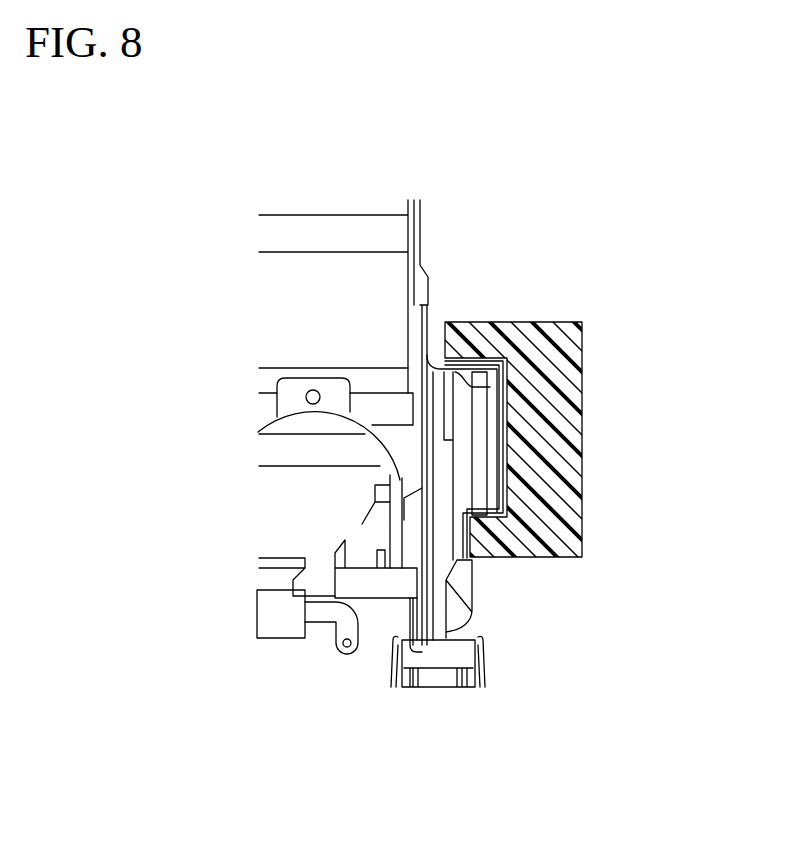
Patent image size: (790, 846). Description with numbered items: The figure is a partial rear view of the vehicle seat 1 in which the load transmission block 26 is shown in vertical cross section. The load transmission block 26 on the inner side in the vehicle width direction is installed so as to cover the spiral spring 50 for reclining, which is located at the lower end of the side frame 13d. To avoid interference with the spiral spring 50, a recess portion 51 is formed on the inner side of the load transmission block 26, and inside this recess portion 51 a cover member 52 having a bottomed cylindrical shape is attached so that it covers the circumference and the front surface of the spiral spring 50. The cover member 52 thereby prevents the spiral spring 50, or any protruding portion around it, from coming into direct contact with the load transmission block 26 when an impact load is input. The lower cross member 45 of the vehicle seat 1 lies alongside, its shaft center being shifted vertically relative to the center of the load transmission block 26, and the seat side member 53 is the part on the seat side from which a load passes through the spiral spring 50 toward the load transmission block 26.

The vehicle seat 1 is at (432, 209).
The side frame 13d is at (421, 247).
The load transmission block 26 is at (582, 414).
The lower cross member 45 is at (293, 452).
The spiral spring 50 is at (478, 483).
The recess portion 51 is at (485, 361).
The cover member 52 is at (505, 369).
The seat side member 53 is at (443, 555).